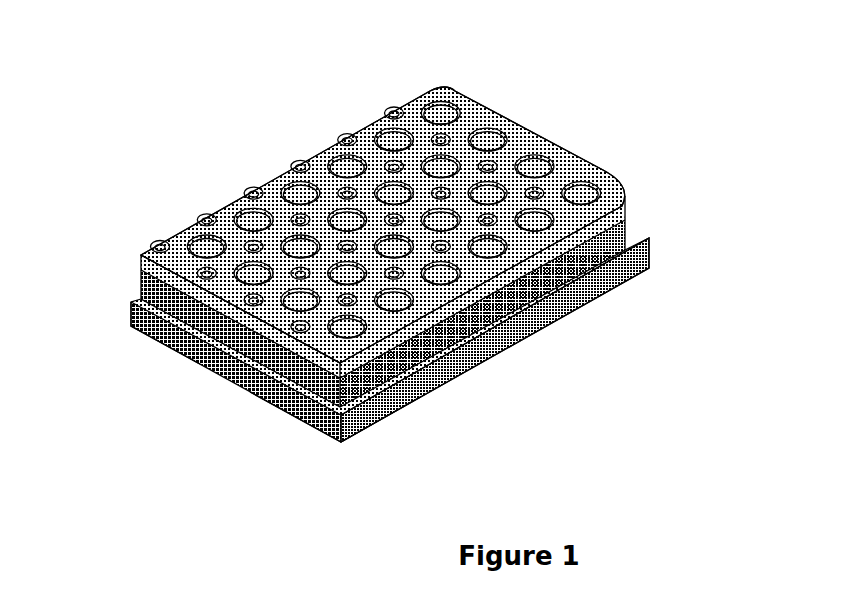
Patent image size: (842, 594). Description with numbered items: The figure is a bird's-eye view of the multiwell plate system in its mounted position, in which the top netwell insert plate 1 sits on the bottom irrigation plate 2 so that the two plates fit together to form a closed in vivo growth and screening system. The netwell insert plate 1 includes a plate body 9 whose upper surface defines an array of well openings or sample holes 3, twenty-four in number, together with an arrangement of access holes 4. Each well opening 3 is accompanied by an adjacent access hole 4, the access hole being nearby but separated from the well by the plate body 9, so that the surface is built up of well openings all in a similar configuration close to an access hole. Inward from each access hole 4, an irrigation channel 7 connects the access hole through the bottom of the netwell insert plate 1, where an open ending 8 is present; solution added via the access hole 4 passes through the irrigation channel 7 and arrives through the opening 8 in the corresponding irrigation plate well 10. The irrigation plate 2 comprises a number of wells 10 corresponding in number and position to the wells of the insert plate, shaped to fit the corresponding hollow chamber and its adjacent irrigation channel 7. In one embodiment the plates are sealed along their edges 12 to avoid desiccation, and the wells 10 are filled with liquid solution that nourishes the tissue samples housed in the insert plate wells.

The netwell insert plate 1 is at (610, 167).
The irrigation plate 2 is at (627, 222).
The well openings 3 is at (480, 97).
The access holes 4 is at (453, 86).
The irrigation channel 7 is at (548, 320).
The open ending 8 is at (357, 418).
The plate body 9 is at (537, 132).
The irrigation plate wells 10 is at (607, 297).
The edges 12 is at (131, 325).